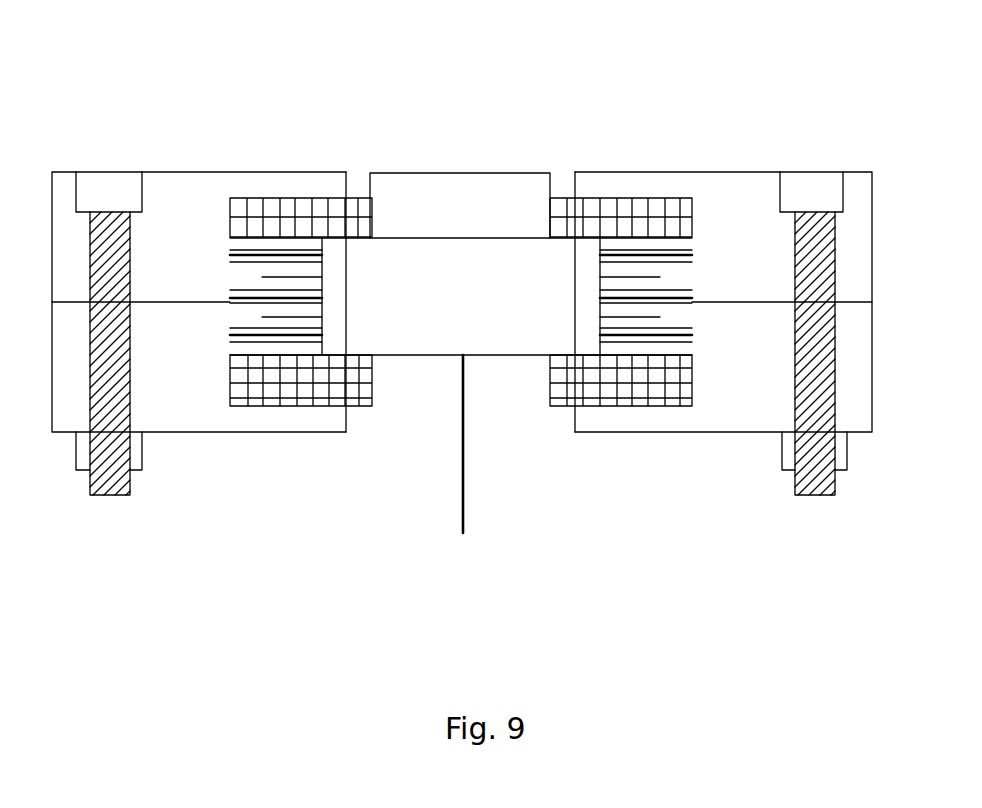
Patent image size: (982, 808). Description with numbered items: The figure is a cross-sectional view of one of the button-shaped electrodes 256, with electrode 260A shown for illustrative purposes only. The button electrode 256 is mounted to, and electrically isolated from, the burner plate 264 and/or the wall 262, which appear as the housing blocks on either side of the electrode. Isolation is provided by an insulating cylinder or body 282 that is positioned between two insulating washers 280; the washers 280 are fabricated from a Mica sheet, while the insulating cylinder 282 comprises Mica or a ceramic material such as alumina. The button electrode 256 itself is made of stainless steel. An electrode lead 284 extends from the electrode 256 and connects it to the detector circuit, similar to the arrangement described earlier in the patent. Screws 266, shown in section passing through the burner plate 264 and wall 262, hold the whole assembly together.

The button-shaped electrode 256 is at (537, 77).
The electrode 260A is at (437, 172).
The wall 262 is at (197, 406).
The burner plate 264 is at (197, 276).
The screws 266 is at (820, 172).
The insulating washers 280 is at (280, 198).
The insulating cylinder 282 is at (232, 322).
The electrode lead 284 is at (467, 507).